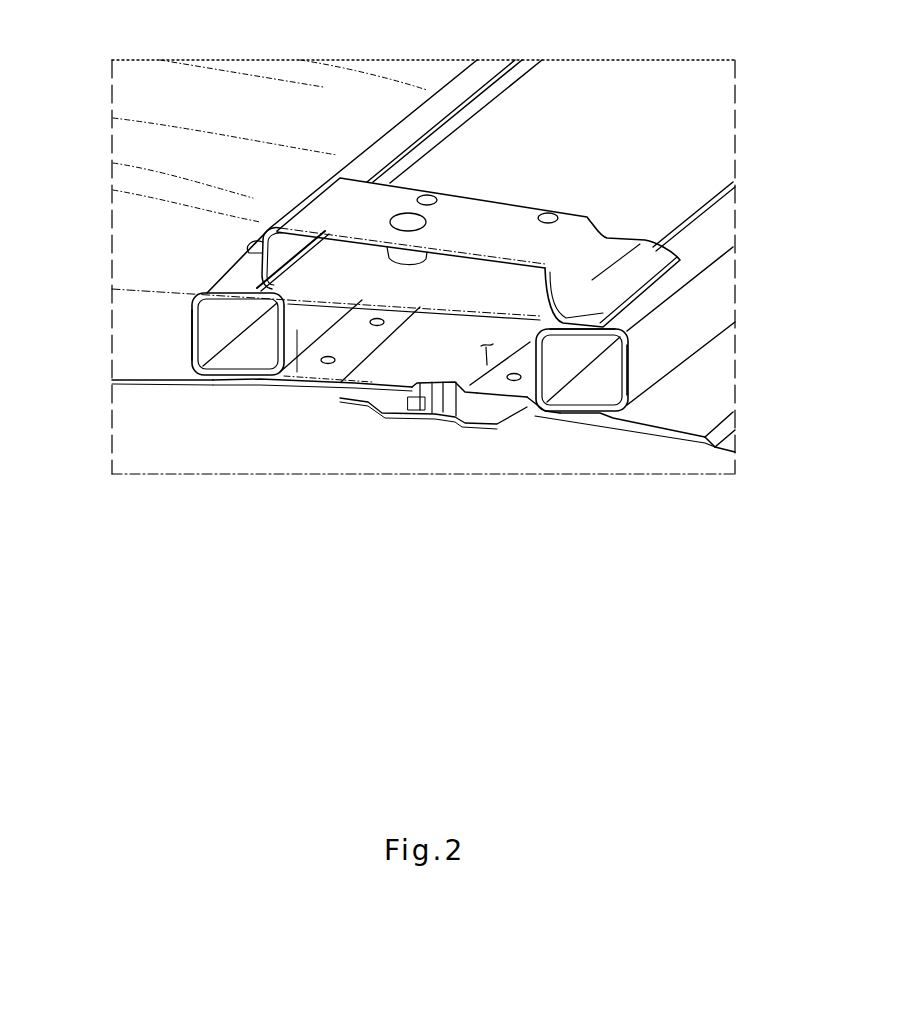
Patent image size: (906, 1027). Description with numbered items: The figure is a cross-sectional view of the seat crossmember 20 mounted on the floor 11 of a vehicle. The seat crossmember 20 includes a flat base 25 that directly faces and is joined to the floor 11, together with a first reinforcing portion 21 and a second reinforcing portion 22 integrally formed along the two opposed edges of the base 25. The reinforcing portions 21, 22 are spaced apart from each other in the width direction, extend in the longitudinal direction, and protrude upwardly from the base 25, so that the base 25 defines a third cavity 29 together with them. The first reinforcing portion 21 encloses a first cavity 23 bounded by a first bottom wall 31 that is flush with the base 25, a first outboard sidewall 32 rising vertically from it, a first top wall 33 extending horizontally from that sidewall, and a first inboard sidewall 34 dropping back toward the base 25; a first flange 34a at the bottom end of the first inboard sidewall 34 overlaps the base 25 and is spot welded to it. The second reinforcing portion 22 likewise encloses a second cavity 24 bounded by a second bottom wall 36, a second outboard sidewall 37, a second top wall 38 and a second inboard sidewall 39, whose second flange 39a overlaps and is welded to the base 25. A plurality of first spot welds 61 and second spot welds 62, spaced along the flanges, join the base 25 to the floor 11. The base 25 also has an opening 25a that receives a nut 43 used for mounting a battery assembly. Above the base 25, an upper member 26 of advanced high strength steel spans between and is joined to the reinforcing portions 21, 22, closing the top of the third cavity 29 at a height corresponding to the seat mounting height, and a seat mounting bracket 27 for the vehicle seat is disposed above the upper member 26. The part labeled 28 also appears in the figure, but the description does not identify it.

The floor 11 is at (112, 380).
The seat crossmember 20 is at (597, 97).
The first reinforcing portion 21 is at (213, 377).
The second reinforcing portion 22 is at (603, 424).
The first cavity 23 is at (269, 362).
The second cavity 24 is at (615, 390).
The base 25 is at (397, 372).
The opening 25a is at (427, 383).
The upper member 26 is at (340, 280).
The seat mounting bracket 27 is at (498, 213).
The connecting plate 28 is at (387, 415).
The third cavity 29 is at (487, 352).
The first bottom wall 31 is at (241, 392).
The first outboard sidewall 32 is at (193, 329).
The first top wall 33 is at (213, 290).
The first inboard sidewall 34 is at (295, 330).
The first flange 34a is at (317, 370).
The second bottom wall 36 is at (580, 420).
The second outboard sidewall 37 is at (633, 367).
The second top wall 38 is at (617, 322).
The second inboard sidewall 39 is at (532, 408).
The second flange 39a is at (478, 396).
The nut 43 is at (457, 394).
The first spot welds 61 is at (377, 327).
The second spot welds 62 is at (514, 381).